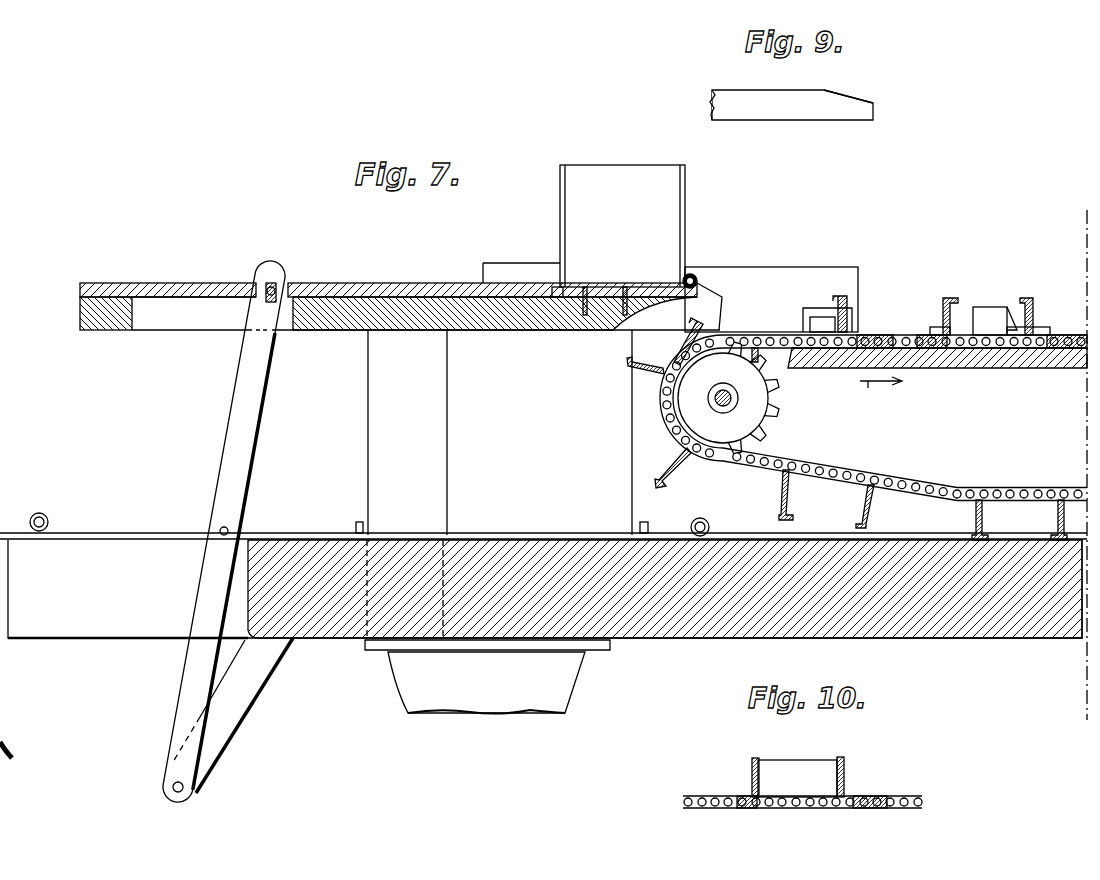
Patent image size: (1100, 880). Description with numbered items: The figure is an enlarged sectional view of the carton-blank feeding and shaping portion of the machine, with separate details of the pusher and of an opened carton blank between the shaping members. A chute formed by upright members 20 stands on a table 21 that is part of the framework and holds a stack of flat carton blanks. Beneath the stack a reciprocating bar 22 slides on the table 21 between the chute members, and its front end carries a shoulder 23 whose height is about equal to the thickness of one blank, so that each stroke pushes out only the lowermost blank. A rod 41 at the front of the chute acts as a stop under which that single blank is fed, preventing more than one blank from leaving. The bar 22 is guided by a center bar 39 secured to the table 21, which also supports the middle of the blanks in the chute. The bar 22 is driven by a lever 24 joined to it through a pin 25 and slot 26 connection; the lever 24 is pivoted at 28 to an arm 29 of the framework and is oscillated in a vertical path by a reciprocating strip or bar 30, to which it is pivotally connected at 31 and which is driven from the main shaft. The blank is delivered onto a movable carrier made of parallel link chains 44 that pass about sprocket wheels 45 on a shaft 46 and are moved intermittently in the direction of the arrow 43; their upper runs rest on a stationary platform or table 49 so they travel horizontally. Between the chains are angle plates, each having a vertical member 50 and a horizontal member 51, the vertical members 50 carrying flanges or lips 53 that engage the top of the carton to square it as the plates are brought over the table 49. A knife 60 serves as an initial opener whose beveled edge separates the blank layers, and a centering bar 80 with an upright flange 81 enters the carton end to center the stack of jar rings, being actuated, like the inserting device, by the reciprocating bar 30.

In FIG. 7, the upright members of the chute 20 is at (606, 166).
In FIG. 7, the table 21 is at (513, 333).
In FIG. 7, the reciprocating bar 22 is at (383, 285).
In FIG. 9, the reciprocating bar 22 is at (703, 107).
In FIG. 9, the shoulder 23 is at (832, 96).
In FIG. 7, the lever 24 is at (240, 433).
In FIG. 7, the pin 25 is at (265, 290).
In FIG. 7, the slot 26 is at (277, 284).
In FIG. 7, the pivot 28 is at (165, 790).
In FIG. 7, the arm 29 is at (238, 708).
In FIG. 7, the strip or bar 30 is at (126, 532).
In FIG. 7, the pivotal connection 31 is at (219, 530).
In FIG. 7, the center bar 39 is at (612, 290).
In FIG. 7, the rod 41 is at (694, 276).
In FIG. 7, the arrow 43 is at (881, 394).
In FIG. 7, the link chains 44 is at (1000, 368).
In FIG. 10, the link chains 44 is at (703, 810).
In FIG. 7, the sprocket wheels 45 is at (779, 416).
In FIG. 7, the shaft 46 is at (730, 406).
In FIG. 7, the stationary platform or table 49 is at (928, 370).
In FIG. 7, the vertical member 50 is at (940, 318).
In FIG. 10, the vertical member 50 is at (750, 770).
In FIG. 7, the horizontal member 51 is at (872, 333).
In FIG. 10, the horizontal member 51 is at (742, 808).
In FIG. 7, the flanges or lips 53 is at (956, 297).
In FIG. 10, the flanges or lips 53 is at (762, 758).
In FIG. 7, the knife 60 is at (826, 318).
In FIG. 7, the bar 80 is at (1012, 318).
In FIG. 7, the upright flange 81 is at (1010, 304).